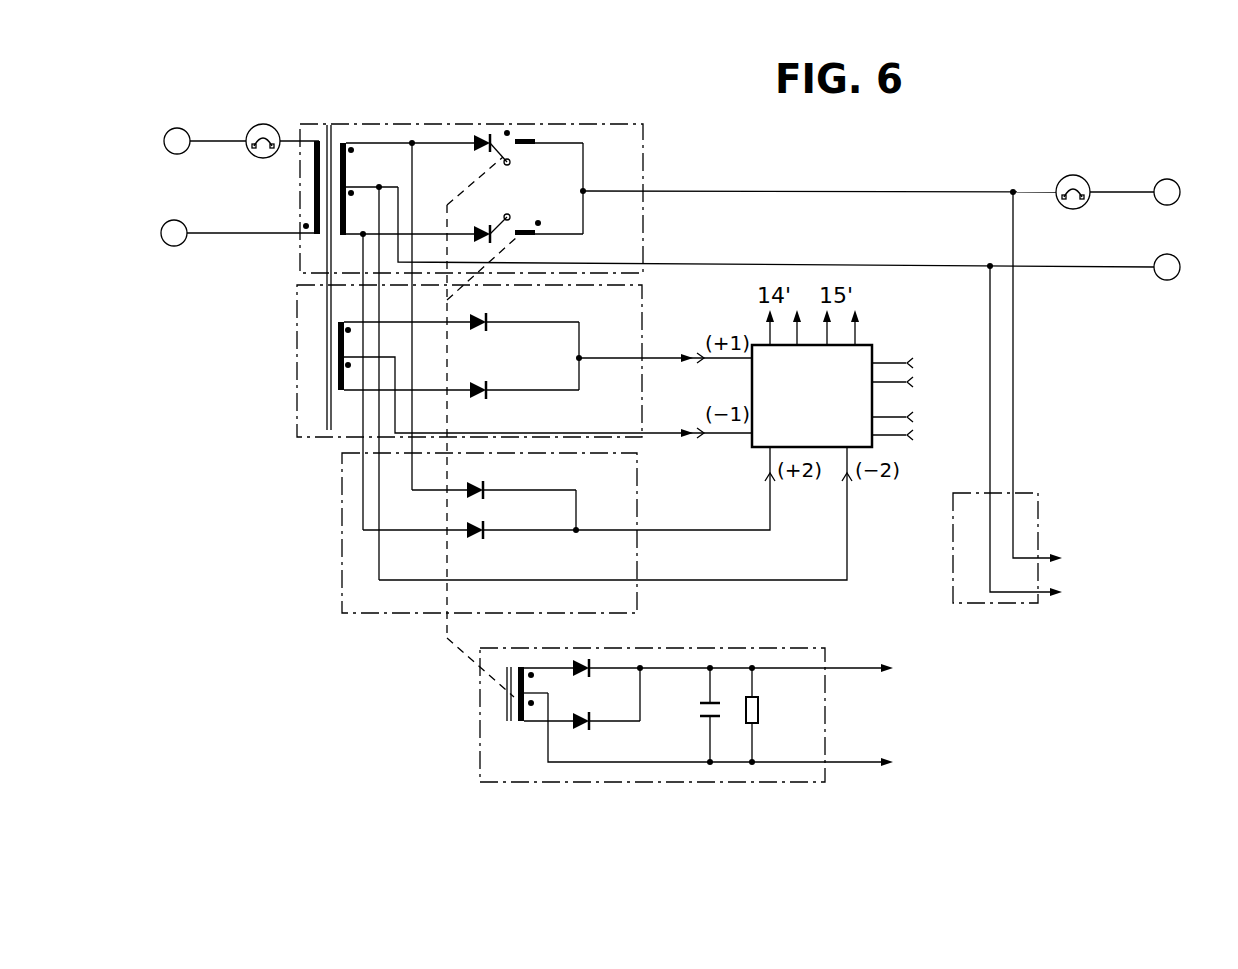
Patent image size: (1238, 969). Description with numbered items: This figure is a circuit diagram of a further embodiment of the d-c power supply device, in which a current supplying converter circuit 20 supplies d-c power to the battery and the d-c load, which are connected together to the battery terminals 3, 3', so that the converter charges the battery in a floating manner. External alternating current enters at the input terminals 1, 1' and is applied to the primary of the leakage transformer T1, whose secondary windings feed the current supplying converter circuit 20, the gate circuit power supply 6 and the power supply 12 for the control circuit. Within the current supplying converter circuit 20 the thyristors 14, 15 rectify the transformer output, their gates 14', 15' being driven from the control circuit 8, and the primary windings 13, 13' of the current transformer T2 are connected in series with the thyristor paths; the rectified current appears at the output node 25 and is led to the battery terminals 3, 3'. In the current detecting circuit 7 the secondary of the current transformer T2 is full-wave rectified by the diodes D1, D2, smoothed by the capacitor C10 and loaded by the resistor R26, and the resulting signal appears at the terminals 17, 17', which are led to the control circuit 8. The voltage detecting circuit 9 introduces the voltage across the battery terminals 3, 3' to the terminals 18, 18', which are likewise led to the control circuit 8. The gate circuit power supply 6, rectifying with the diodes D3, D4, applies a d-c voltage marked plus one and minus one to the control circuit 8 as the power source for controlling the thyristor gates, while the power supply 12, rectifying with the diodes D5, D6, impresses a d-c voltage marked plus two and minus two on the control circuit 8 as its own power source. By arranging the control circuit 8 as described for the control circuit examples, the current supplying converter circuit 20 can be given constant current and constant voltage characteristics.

The input terminal 1 is at (185, 138).
The input terminal 1' is at (219, 230).
The battery terminal 3 is at (1138, 192).
The battery terminal 3' is at (1107, 267).
The gate circuit power supply 6 is at (297, 335).
The current detecting circuit 7 is at (480, 749).
The control circuit 8 is at (872, 349).
The voltage detecting circuit 9 is at (1038, 503).
The power supply for the control circuit 12 is at (342, 545).
The primary winding 13 is at (546, 113).
The primary winding 13' is at (551, 246).
The thyristor 14 is at (457, 153).
The thyristor gate 14' is at (528, 155).
The thyristor 15 is at (490, 209).
The thyristor gate 15' is at (535, 219).
The terminal 17 is at (801, 515).
The terminal 17' is at (759, 572).
The terminal 18 is at (996, 381).
The terminal 18' is at (999, 435).
The current supplying converter circuit 20 is at (298, 192).
The output node 25 is at (582, 191).
The leakage transformer T1 is at (326, 415).
The current transformer T2 is at (508, 723).
The diode D1 is at (591, 676).
The diode D2 is at (591, 729).
The diode D3 is at (489, 330).
The diode D4 is at (489, 398).
The diode D5 is at (488, 486).
The diode D6 is at (487, 537).
The capacitor C10 is at (700, 710).
The resistor R26 is at (760, 706).